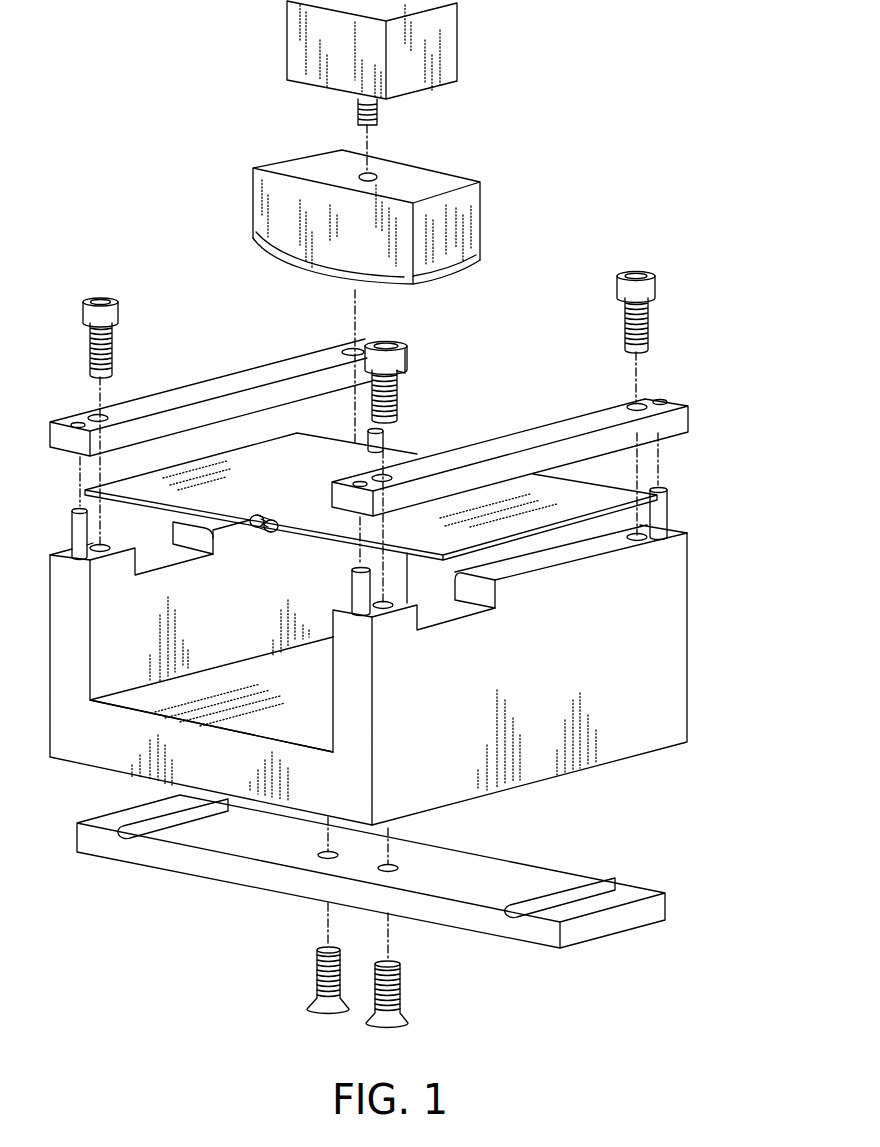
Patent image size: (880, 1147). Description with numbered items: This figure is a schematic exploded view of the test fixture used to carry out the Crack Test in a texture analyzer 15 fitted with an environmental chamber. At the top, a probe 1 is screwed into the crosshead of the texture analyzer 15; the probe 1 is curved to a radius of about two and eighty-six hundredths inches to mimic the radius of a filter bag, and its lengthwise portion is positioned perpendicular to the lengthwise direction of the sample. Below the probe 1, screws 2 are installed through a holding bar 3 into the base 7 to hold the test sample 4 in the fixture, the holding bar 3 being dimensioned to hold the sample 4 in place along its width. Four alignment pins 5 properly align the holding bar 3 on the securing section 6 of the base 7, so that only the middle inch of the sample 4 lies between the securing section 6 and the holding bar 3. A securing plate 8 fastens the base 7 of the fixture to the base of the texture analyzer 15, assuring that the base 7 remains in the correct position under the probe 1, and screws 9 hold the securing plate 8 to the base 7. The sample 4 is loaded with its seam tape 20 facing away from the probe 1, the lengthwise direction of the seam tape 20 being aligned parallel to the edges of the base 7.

The probe 1 is at (463, 228).
The screws 2 is at (650, 322).
The holding bar 3 is at (680, 417).
The test sample 4 is at (603, 490).
The alignment pins 5 is at (663, 517).
The securing section 6 is at (517, 570).
The base 7 is at (633, 705).
The securing plate 8 is at (477, 853).
The screws 9 is at (405, 1032).
The texture analyzer 15 is at (433, 47).
The seam tape 20 is at (283, 528).